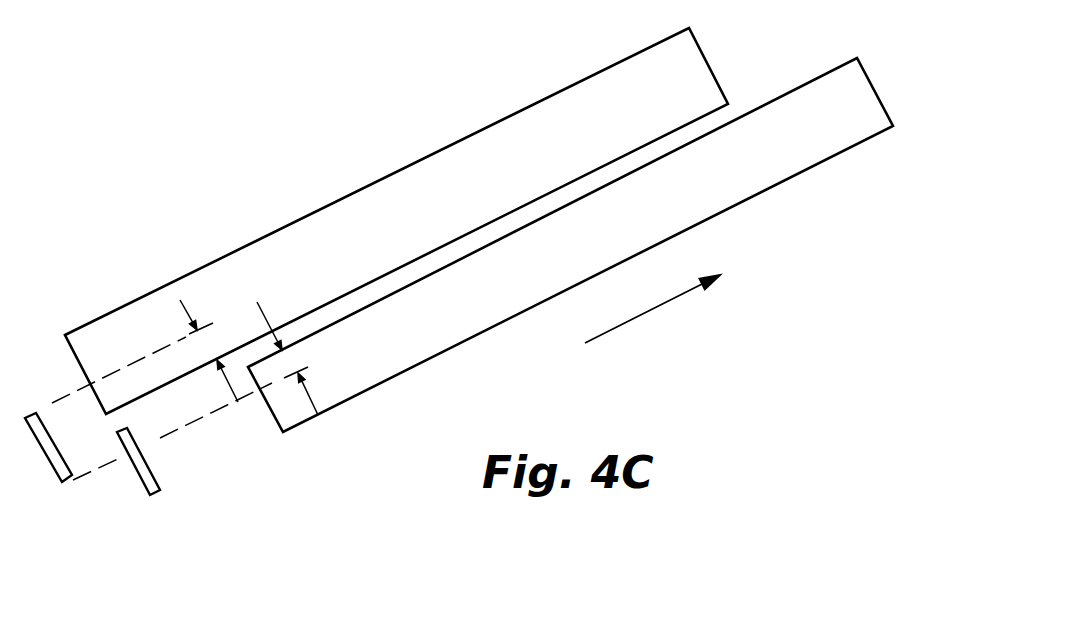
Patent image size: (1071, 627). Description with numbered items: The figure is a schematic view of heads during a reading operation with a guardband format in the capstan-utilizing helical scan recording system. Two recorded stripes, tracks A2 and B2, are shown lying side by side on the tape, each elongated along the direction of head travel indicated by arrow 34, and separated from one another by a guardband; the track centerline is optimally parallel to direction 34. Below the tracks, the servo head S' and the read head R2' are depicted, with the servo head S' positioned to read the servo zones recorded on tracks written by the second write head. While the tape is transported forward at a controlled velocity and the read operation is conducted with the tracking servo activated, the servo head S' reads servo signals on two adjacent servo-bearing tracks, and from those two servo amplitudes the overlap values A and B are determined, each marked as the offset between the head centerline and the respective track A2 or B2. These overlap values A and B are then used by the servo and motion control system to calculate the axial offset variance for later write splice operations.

The track A2 is at (390, 221).
The track B2 is at (483, 269).
The overlap value A is at (206, 342).
The overlap value B is at (290, 361).
The direction of head travel 34 is at (628, 319).
The servo head S' is at (52, 475).
The read head R2' is at (169, 483).